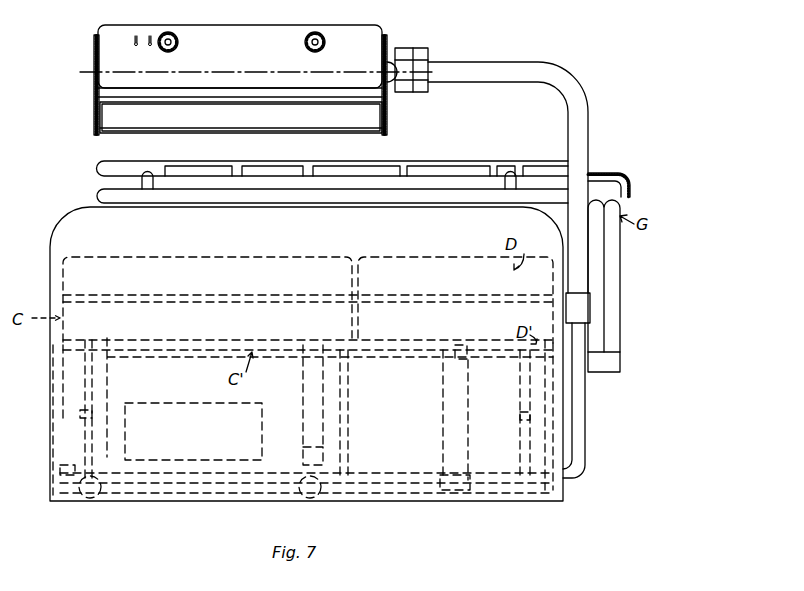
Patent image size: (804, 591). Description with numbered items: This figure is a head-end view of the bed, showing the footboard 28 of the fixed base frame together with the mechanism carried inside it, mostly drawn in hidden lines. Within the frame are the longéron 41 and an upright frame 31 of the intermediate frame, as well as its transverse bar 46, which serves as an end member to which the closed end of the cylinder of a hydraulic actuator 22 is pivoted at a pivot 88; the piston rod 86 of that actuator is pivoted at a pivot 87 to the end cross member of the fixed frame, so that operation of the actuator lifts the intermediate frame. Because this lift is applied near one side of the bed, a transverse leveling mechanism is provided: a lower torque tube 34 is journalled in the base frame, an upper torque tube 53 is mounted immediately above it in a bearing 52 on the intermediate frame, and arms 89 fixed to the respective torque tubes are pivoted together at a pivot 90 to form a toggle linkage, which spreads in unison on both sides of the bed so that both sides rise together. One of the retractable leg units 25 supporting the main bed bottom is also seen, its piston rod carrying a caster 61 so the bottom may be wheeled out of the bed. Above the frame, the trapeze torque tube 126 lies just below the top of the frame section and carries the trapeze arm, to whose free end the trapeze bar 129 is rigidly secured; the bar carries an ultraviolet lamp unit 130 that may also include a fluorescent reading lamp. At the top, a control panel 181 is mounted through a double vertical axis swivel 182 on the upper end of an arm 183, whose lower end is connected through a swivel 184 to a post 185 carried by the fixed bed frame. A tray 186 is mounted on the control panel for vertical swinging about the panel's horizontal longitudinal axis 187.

The control panel 181 is at (217, 38).
The horizontal longitudinal axis 187 is at (265, 73).
The tray 186 is at (104, 118).
The double vertical axis swivel 182 is at (428, 50).
The arm 183 is at (586, 106).
The swivel 184 is at (578, 316).
The post 185 is at (584, 440).
The trapeze torque tube 126 is at (596, 372).
The ultraviolet lamp unit 130 is at (432, 163).
The trapeze bar 129 is at (306, 198).
The footboard 28 is at (52, 238).
The transverse bar 46 is at (405, 333).
The longéron 41 is at (62, 343).
The bearing 52 is at (66, 366).
The arm 89 is at (88, 391).
The pivot 90 is at (84, 418).
The retractable leg unit 25 is at (108, 380).
The upright frame 31 is at (179, 362).
The upper torque tube 53 is at (382, 375).
The piston rod 86 is at (440, 369).
The pivot 88 is at (466, 345).
The hydraulic actuator 22 is at (470, 430).
The lower torque tube 34 is at (407, 477).
The pivot 87 is at (440, 494).
The caster 61 is at (90, 501).